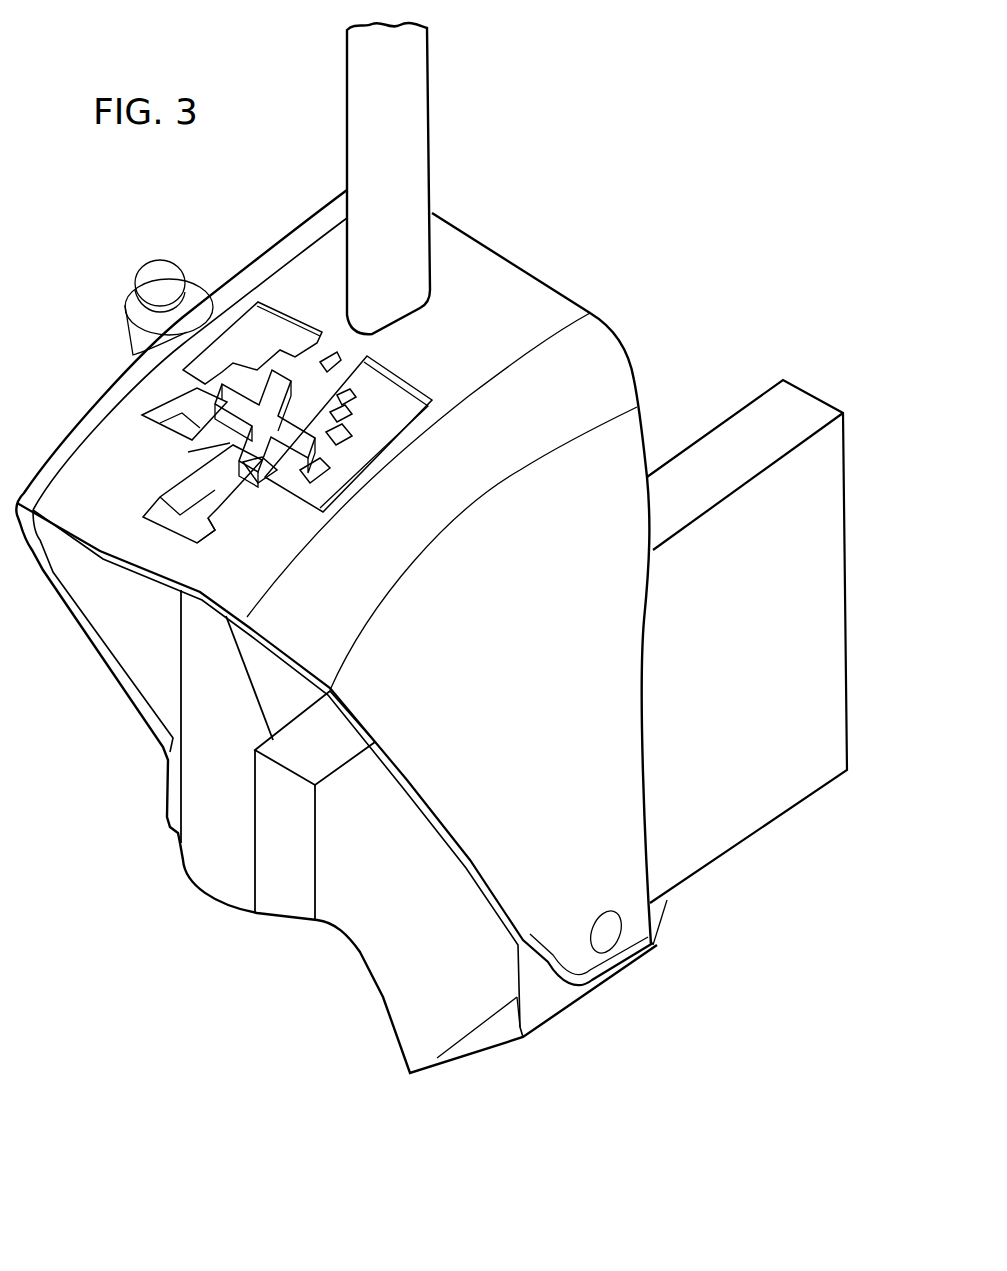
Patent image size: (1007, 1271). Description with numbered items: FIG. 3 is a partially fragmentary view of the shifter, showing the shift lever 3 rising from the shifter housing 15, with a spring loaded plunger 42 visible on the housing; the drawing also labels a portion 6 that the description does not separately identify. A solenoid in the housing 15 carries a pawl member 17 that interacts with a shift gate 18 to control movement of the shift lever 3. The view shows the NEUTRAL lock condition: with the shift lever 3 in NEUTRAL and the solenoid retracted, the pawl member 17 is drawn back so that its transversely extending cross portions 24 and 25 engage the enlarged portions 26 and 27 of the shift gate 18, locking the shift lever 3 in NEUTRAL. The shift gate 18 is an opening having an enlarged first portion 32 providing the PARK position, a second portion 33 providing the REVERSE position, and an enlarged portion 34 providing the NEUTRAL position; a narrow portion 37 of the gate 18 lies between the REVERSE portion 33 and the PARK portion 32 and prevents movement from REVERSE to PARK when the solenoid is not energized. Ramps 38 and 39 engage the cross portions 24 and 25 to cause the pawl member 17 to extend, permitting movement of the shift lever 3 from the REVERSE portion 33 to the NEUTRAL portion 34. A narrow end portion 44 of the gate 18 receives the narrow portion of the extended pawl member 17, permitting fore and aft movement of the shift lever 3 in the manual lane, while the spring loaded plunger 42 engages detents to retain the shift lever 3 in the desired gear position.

The shift lever 3 is at (420, 148).
The housing 6 is at (518, 293).
The housing 15 is at (197, 763).
The pawl member 17 is at (233, 386).
The shift gate 18 is at (340, 386).
The cross portion 24 is at (233, 386).
The cross portion 25 is at (307, 420).
The enlarged portion 26 is at (252, 343).
The enlarged portion 27 is at (348, 402).
The enlarged first portion 32 is at (198, 538).
The second portion 33 is at (245, 470).
The enlarged portion 34 is at (307, 427).
The narrow portion 37 is at (203, 483).
The ramp 38 is at (192, 410).
The ramp 39 is at (307, 467).
The spring loaded plunger 42 is at (152, 278).
The narrow end portion 44 is at (321, 364).